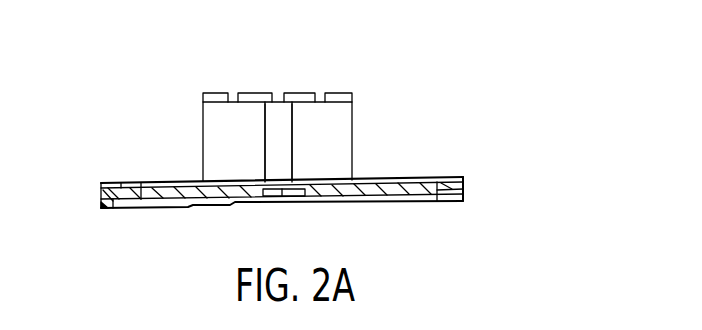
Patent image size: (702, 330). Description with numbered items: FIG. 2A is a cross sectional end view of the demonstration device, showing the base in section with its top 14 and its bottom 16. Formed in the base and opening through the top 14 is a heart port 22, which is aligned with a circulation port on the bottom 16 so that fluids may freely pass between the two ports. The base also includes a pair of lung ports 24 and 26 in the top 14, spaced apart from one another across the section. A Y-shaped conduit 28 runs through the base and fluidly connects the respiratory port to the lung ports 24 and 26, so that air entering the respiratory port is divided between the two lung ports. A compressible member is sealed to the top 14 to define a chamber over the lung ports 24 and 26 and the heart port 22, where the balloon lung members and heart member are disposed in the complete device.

The top 14 is at (418, 175).
The bottom 16 is at (212, 211).
The heart port 22 is at (278, 110).
The lung port 24 is at (207, 137).
The lung port 26 is at (347, 120).
The Y-shaped conduit 28 is at (297, 200).